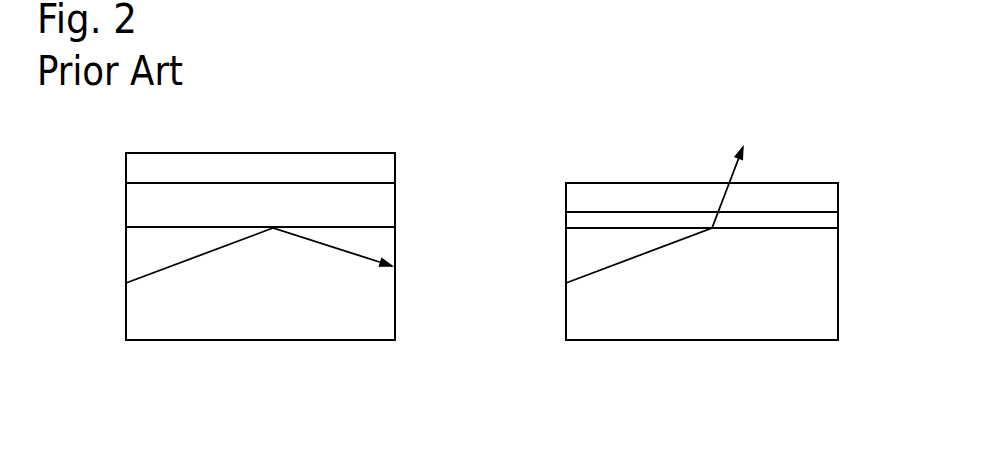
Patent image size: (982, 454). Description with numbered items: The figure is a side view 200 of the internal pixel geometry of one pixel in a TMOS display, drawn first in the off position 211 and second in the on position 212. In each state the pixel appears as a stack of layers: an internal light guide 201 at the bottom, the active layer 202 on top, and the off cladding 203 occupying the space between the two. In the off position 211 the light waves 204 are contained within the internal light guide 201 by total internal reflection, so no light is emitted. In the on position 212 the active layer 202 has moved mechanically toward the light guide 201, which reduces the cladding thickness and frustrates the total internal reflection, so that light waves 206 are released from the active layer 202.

The side view 200 is at (482, 185).
The internal light guide 201 is at (566, 312).
The active layer 202 is at (602, 183).
The off cladding 203 is at (566, 218).
The light waves 204 is at (157, 272).
The light waves 206 is at (671, 195).
The off position 211 is at (260, 280).
The on position 212 is at (702, 295).